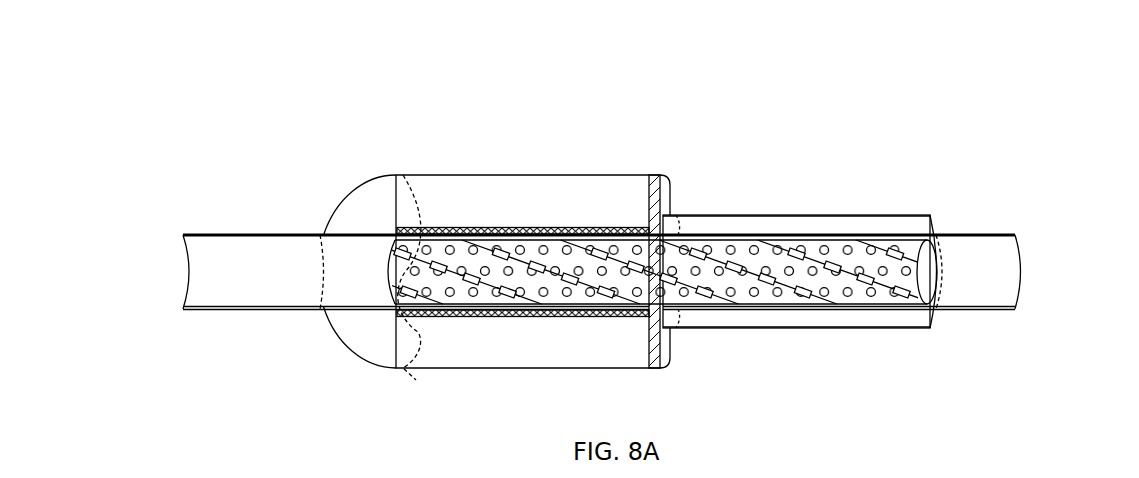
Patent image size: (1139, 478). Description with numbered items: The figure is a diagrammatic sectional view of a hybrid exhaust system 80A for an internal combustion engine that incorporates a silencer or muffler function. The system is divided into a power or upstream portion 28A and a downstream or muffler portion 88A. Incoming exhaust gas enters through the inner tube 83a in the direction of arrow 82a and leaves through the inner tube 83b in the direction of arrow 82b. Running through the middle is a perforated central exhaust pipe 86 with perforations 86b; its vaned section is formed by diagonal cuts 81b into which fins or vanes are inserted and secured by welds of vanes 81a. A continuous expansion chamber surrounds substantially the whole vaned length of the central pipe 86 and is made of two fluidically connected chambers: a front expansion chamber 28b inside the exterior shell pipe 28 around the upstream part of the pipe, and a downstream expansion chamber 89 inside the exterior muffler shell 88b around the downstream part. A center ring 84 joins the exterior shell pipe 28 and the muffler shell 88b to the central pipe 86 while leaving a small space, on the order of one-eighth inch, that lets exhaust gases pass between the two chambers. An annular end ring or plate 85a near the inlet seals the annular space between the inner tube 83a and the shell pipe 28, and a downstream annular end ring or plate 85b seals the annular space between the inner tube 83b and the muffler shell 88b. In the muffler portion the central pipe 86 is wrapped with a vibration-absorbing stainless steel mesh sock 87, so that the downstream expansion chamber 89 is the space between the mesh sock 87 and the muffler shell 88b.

The hybrid exhaust system 80A is at (246, 96).
The downstream or muffler portion 88A is at (660, 138).
The power portion or upstream portion 28A is at (948, 138).
The vibration-absorbing material 87 is at (468, 227).
The downstream expansion chamber 89 is at (567, 189).
The center ring 84 is at (676, 192).
The welds of vanes 81a is at (741, 267).
The diagonal cuts 81b is at (850, 270).
The annular end ring or plate 85a is at (936, 226).
The inner tube 83a is at (985, 235).
The arrow indicating incoming exhaust gas flow 82a is at (1090, 272).
The inner tube 83b is at (229, 235).
The arrow indicating exiting exhaust gas flow 82b is at (106, 272).
The annular end ring or plate 85b is at (416, 380).
The exterior muffler shell 88b is at (546, 368).
The perforated central exhaust pipe 86 is at (752, 305).
The perforations 86b is at (793, 297).
The exterior shell pipe 28 is at (848, 328).
The front expansion chamber 28b is at (912, 318).